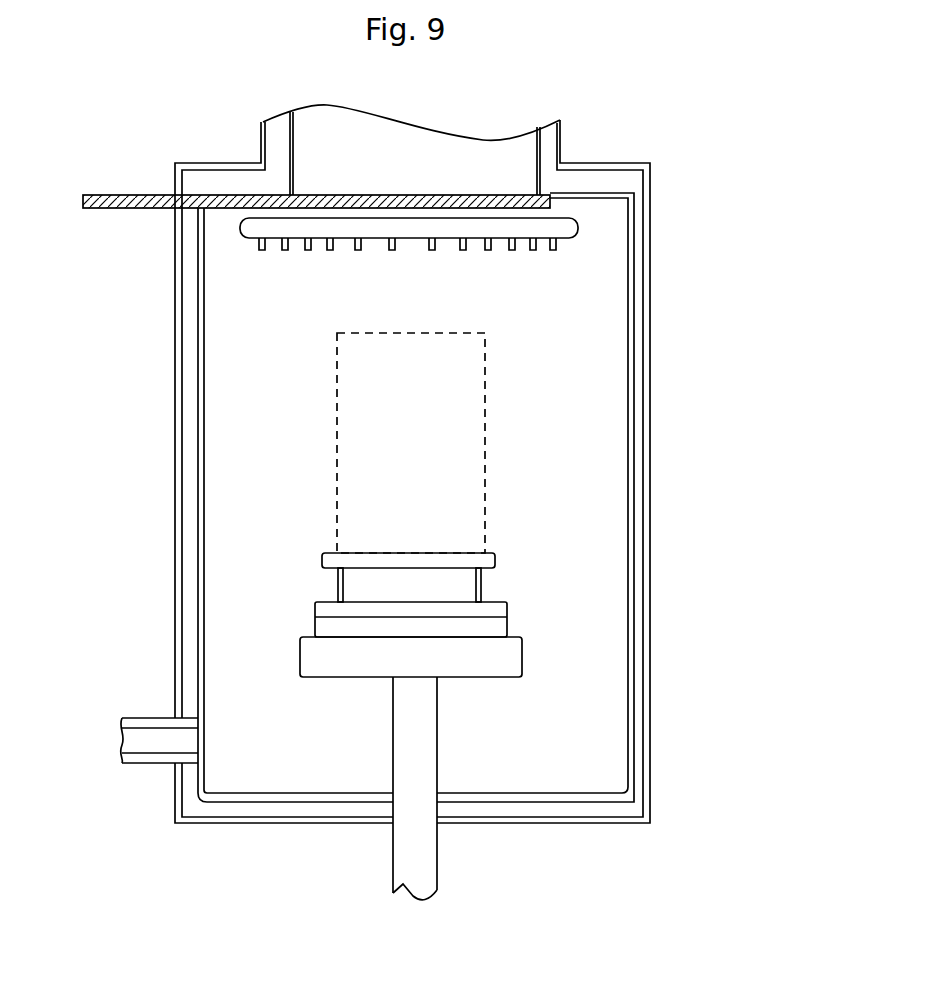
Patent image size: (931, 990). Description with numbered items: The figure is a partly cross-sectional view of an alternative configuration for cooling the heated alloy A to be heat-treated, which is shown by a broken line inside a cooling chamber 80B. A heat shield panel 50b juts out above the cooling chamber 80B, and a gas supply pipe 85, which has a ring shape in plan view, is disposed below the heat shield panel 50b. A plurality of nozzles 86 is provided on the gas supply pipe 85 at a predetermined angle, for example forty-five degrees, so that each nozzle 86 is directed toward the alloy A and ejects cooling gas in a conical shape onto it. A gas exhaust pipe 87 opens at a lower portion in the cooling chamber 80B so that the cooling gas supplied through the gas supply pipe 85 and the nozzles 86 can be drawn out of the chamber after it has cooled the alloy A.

The cooling chamber 80B is at (313, 805).
The heat shield panel 50b is at (140, 195).
The gas supply pipe 85 is at (240, 226).
The nozzle 86 is at (245, 245).
The gas exhaust pipe 87 is at (155, 740).
The alloy to be heat-treated A is at (485, 428).